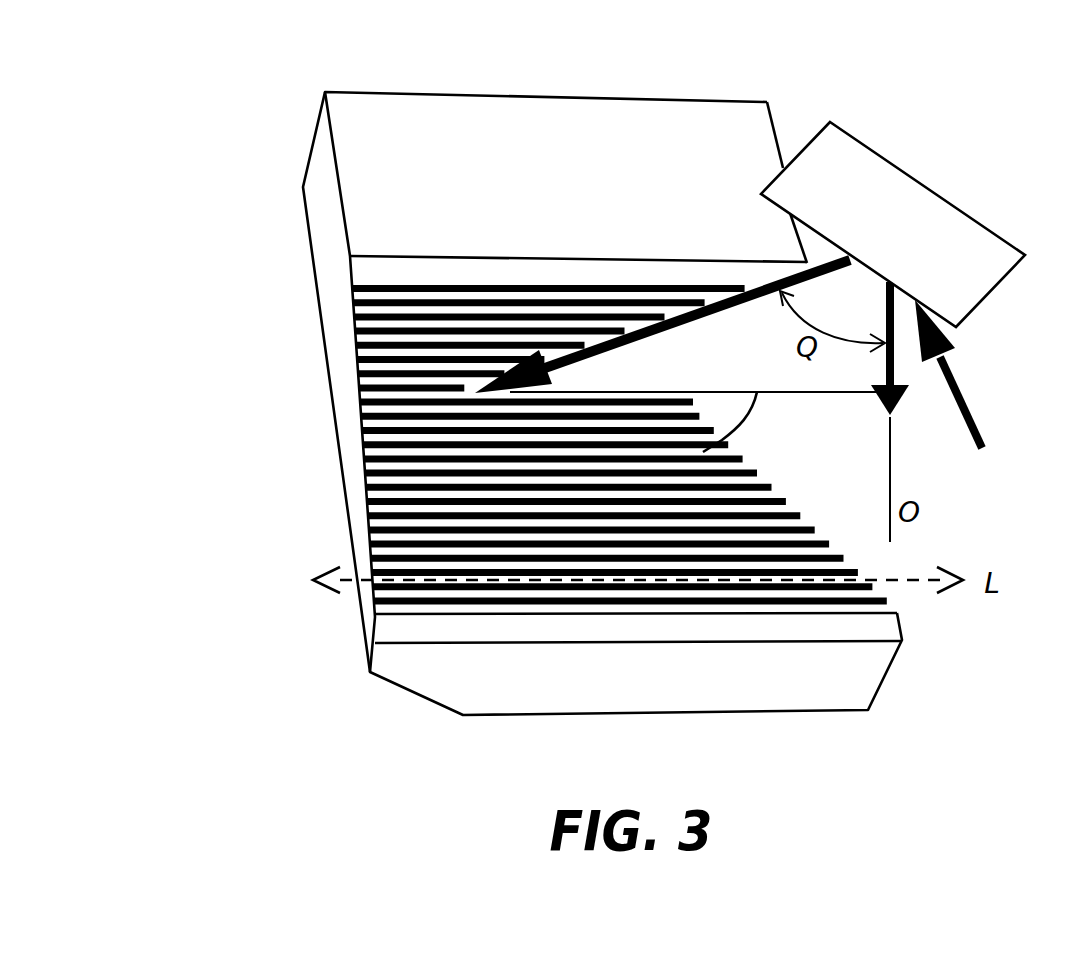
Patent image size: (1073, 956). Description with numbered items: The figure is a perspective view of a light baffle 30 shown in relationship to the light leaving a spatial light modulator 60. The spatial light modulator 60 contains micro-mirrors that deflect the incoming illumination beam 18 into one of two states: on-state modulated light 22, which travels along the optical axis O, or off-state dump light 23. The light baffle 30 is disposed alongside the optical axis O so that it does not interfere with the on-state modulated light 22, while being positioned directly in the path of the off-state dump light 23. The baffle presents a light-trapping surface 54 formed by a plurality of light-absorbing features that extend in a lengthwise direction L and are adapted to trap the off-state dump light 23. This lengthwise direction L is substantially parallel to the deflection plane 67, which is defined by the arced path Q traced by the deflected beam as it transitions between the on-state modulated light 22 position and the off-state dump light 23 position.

The light baffle 30 is at (612, 112).
The light-trapping surface 54 is at (270, 293).
The deflection plane 67 is at (700, 368).
The off-state dump light 23 is at (790, 262).
The on-state modulated light 22 is at (897, 400).
The illumination beam 18 is at (963, 390).
The spatial light modulator 60 is at (975, 237).